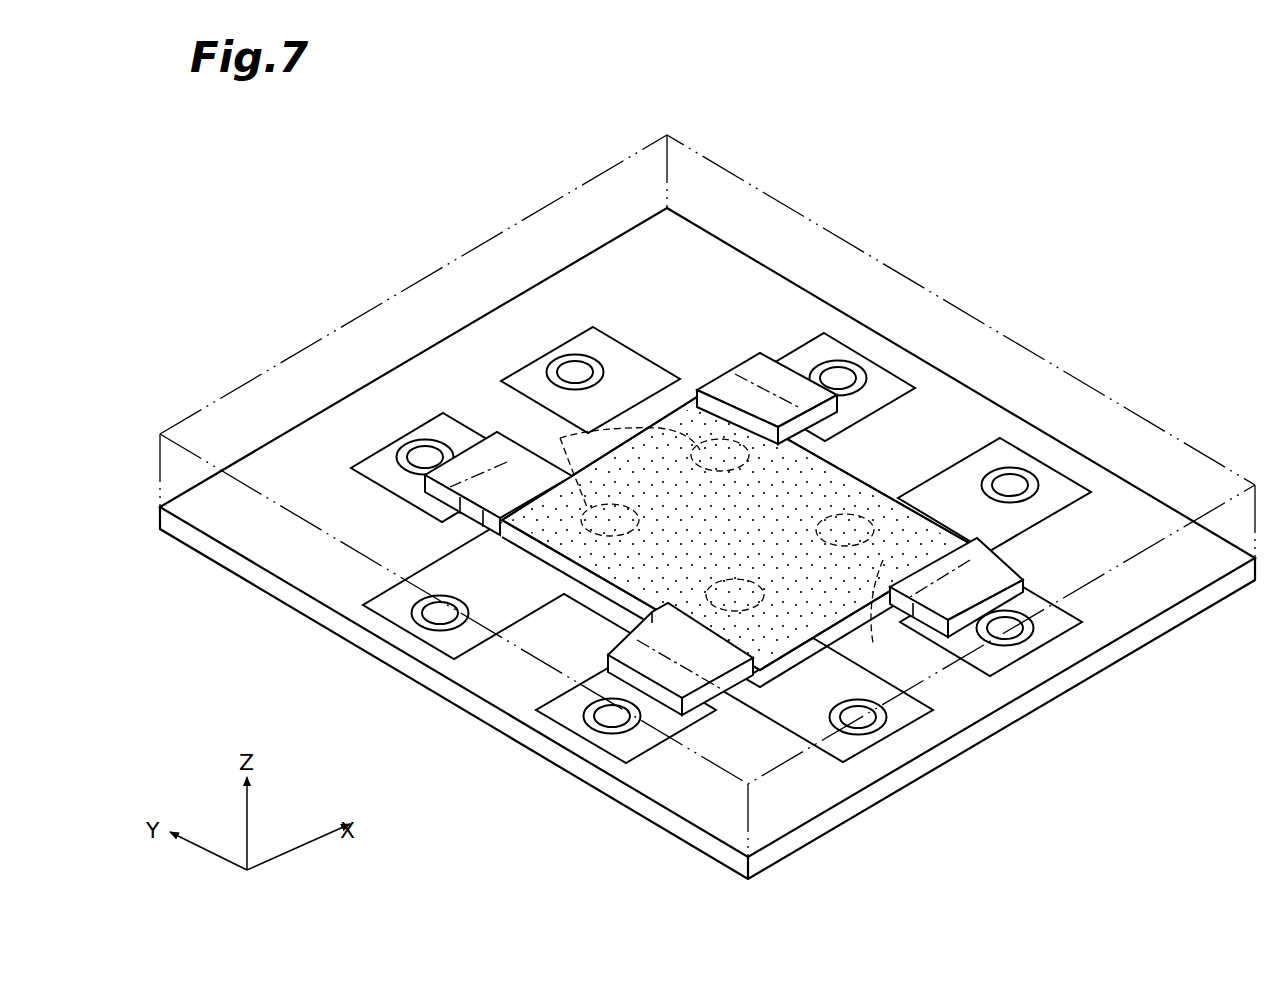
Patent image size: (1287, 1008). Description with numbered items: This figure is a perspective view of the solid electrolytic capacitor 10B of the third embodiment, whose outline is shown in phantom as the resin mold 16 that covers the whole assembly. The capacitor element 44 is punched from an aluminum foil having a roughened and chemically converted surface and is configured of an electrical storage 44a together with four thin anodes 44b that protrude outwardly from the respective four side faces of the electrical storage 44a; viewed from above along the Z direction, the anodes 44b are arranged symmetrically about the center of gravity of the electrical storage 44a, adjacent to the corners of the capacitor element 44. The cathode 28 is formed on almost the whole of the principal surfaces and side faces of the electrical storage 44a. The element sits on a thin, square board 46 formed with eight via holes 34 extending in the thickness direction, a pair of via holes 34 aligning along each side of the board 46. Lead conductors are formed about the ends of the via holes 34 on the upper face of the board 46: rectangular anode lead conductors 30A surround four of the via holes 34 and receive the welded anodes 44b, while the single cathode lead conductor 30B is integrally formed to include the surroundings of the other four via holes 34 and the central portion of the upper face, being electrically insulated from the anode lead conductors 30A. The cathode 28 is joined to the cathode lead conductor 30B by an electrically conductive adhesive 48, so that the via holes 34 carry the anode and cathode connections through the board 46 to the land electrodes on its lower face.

The solid electrolytic capacitor 10B is at (1137, 213).
The resin mold 16 is at (890, 262).
The cathode 28 is at (690, 415).
The anode lead conductors 30A is at (385, 460).
The cathode lead conductor 30B is at (775, 700).
The via holes 34 is at (550, 346).
The capacitor element 44 is at (862, 474).
The electrical storage 44a is at (660, 402).
The anodes 44b is at (777, 372).
The board 46 is at (1130, 468).
The electrically conductive adhesive 48 is at (878, 645).